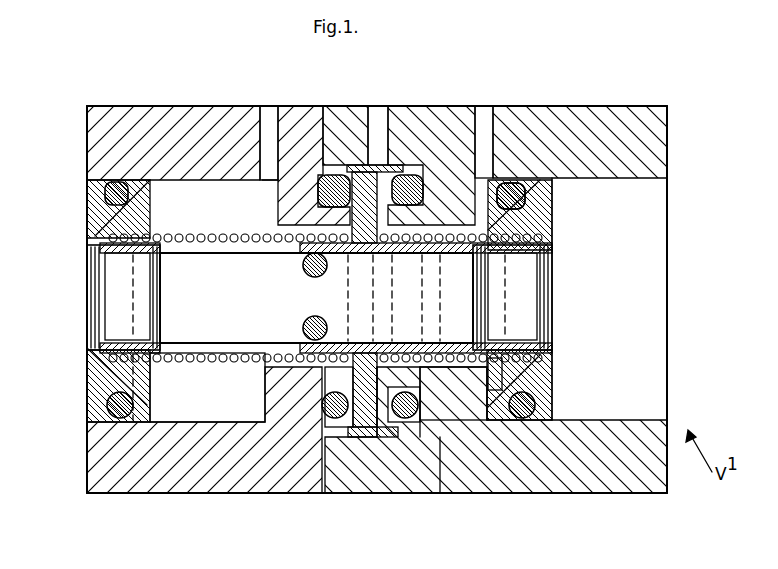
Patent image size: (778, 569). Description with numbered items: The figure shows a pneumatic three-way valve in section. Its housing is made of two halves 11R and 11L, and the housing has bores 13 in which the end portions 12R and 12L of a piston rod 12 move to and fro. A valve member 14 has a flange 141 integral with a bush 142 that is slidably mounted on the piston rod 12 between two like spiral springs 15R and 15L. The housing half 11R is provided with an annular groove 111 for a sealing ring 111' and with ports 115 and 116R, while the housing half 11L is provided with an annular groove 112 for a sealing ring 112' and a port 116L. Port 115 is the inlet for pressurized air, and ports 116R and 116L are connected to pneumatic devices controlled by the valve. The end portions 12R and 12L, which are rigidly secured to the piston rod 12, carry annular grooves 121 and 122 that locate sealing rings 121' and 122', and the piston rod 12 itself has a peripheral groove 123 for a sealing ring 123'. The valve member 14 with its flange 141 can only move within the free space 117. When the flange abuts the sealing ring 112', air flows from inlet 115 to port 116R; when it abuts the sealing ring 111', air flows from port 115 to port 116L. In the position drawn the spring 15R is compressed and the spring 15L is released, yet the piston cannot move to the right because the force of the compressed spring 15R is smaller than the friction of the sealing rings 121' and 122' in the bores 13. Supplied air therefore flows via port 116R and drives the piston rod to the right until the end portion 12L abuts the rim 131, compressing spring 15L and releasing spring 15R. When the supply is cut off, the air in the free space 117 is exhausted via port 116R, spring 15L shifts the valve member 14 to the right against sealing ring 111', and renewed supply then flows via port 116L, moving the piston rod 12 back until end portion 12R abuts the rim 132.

The housing half 11L is at (203, 472).
The housing half 11R is at (540, 468).
The piston rod 12 is at (545, 277).
The end portion 12L is at (100, 238).
The end portion 12R is at (552, 238).
The bores 13 is at (163, 178).
The valve member 14 is at (375, 437).
The spiral spring 15L is at (162, 363).
The spiral spring 15R is at (490, 395).
The annular groove 111 is at (442, 454).
The sealing ring 111' is at (410, 454).
The annular groove 112 is at (316, 454).
The sealing ring 112' is at (368, 466).
The port 115 is at (385, 106).
The port 116L is at (270, 106).
The port 116R is at (484, 106).
The free space 117 is at (398, 437).
The annular groove 121 is at (557, 215).
The sealing ring 121' is at (577, 204).
The annular groove 122 is at (91, 209).
The sealing ring 122' is at (79, 205).
The peripheral groove 123 is at (260, 268).
The sealing ring 123' is at (268, 322).
The rim 131 is at (264, 203).
The rim 132 is at (503, 178).
The flange 141 is at (282, 376).
The bush 142 is at (300, 245).